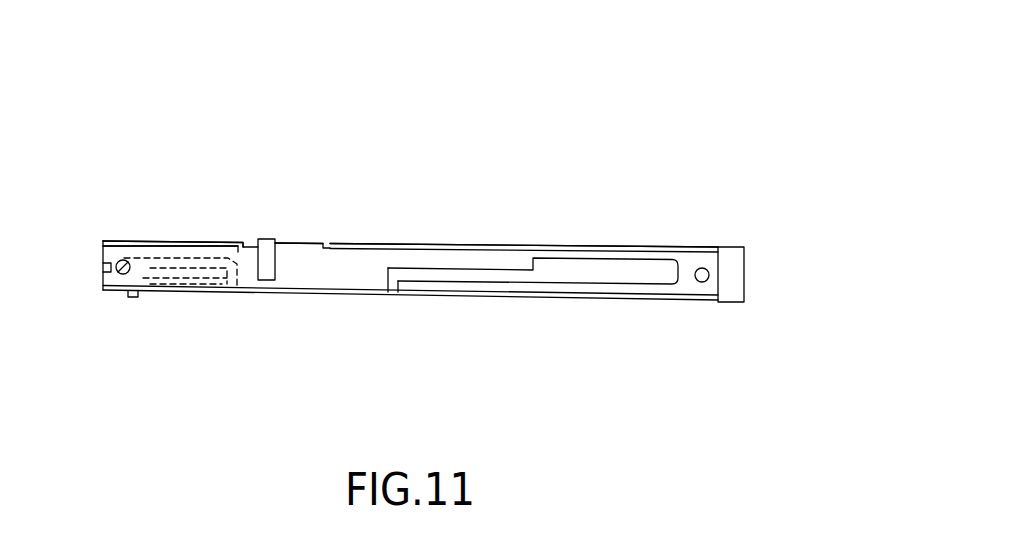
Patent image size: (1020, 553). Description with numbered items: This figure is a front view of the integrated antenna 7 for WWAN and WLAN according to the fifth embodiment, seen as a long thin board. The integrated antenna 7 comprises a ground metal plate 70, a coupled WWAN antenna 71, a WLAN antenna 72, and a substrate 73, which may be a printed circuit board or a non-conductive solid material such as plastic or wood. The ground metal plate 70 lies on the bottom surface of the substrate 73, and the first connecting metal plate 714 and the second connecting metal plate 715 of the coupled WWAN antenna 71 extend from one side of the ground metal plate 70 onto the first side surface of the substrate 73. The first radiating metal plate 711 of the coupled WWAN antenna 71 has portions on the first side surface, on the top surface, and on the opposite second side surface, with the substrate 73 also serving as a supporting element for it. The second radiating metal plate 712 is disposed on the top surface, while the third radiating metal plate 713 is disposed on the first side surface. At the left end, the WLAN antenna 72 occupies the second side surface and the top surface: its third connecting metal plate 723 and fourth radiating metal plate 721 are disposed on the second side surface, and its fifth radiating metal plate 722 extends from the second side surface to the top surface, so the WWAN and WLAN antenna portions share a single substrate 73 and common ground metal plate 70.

The integrated antenna 7 is at (466, 220).
The ground metal plate 70 is at (474, 298).
The coupled WWAN antenna 71 is at (469, 259).
The first radiating metal plate 711 is at (300, 240).
The second radiating metal plate 712 is at (513, 247).
The third radiating metal plate 713 is at (556, 268).
The first connecting metal plate 714 is at (730, 273).
The second connecting metal plate 715 is at (393, 284).
The WLAN antenna 72 is at (184, 252).
The fourth radiating metal plate 721 is at (117, 290).
The fifth radiating metal plate 722 is at (235, 290).
The third connecting metal plate 723 is at (207, 290).
The substrate 73 is at (359, 270).